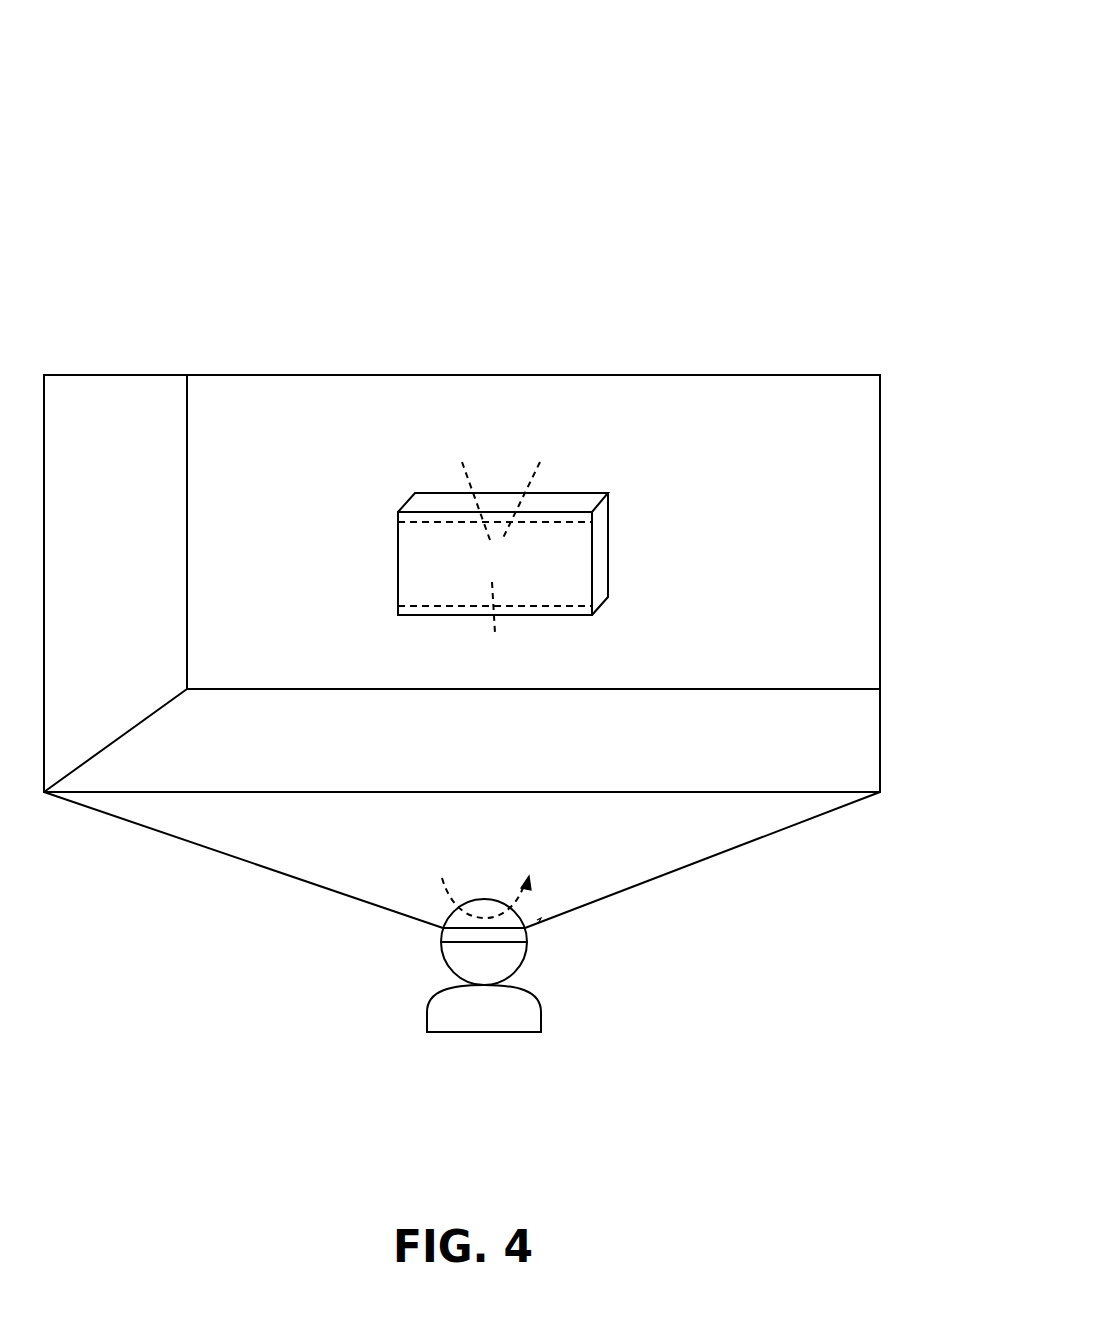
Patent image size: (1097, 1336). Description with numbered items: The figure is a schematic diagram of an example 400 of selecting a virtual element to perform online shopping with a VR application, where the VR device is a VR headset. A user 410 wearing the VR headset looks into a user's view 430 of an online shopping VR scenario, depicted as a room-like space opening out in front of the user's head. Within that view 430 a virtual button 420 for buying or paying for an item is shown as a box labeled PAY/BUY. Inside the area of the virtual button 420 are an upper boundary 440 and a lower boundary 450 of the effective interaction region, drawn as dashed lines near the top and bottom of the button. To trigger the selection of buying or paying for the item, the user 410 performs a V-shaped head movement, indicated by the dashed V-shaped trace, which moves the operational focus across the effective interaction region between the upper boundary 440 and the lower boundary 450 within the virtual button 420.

The example 400 is at (906, 82).
The user 410 is at (440, 975).
The virtual button 420 is at (602, 552).
The user's view 430 is at (693, 845).
The upper boundary 440 is at (398, 522).
The lower boundary 450 is at (398, 606).